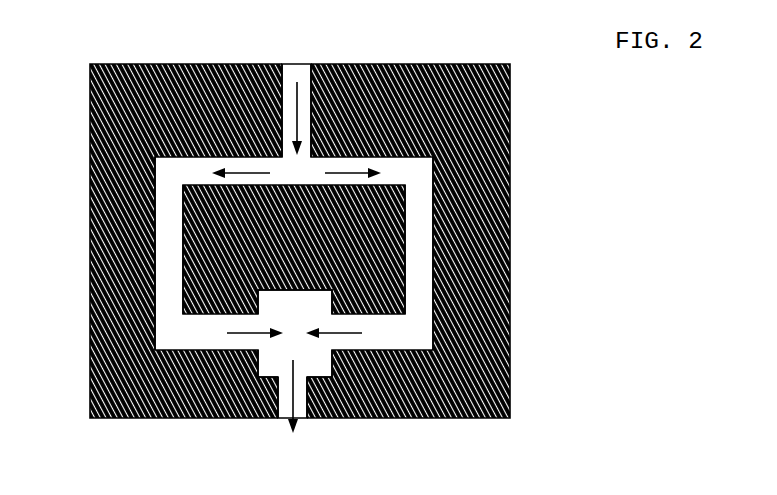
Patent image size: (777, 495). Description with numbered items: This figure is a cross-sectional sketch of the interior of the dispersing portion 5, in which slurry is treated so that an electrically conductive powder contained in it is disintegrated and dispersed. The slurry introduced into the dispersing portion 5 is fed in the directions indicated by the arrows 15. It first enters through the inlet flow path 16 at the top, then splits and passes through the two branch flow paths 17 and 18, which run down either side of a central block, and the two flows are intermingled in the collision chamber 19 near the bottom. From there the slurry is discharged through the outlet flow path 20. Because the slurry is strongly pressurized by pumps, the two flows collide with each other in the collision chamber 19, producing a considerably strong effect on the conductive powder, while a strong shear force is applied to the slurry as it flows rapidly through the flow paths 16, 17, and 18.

The dispersing portion 5 is at (70, 103).
The arrows 15 is at (355, 171).
The inlet flow path 16 is at (306, 93).
The branch flow path 17 is at (162, 246).
The branch flow path 18 is at (424, 252).
The collision chamber 19 is at (313, 354).
The outlet flow path 20 is at (303, 420).